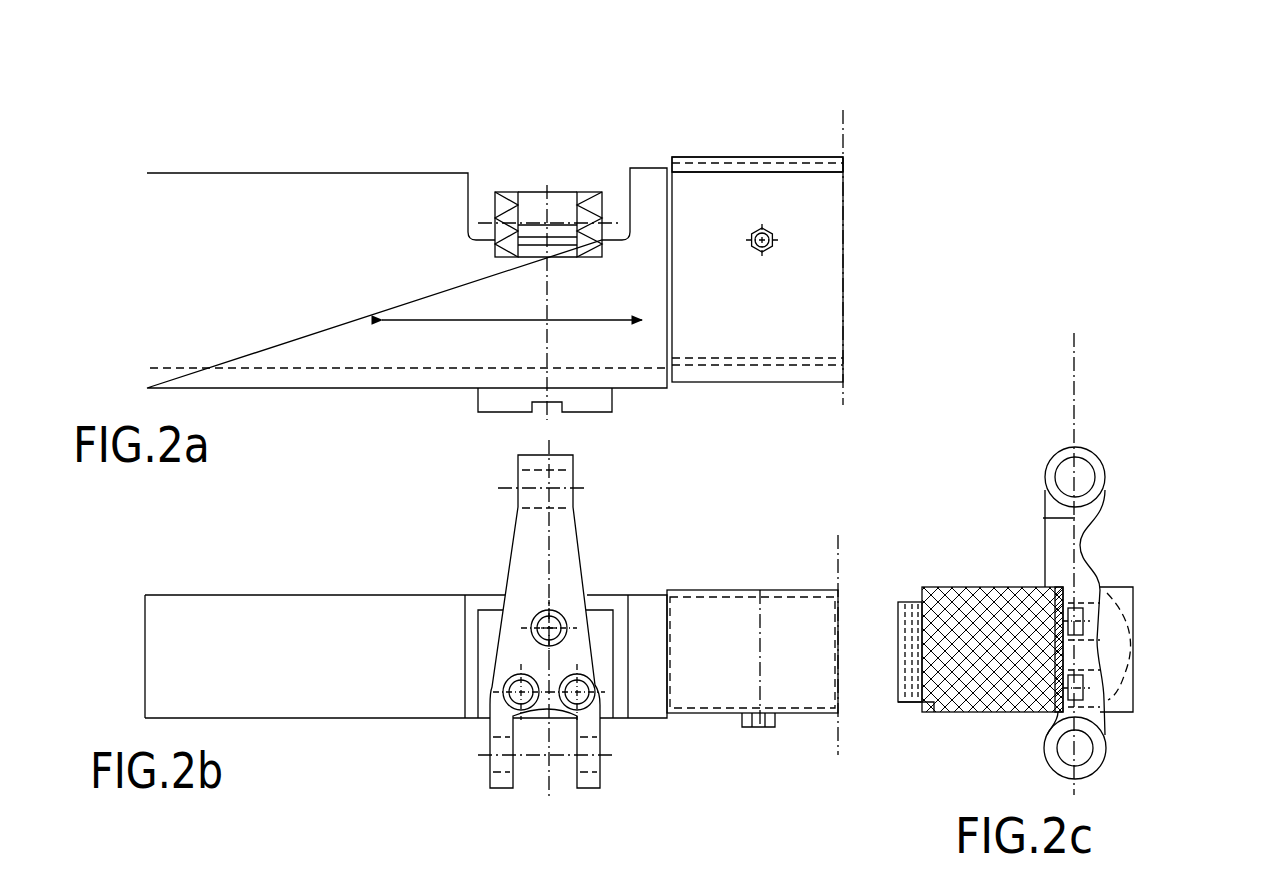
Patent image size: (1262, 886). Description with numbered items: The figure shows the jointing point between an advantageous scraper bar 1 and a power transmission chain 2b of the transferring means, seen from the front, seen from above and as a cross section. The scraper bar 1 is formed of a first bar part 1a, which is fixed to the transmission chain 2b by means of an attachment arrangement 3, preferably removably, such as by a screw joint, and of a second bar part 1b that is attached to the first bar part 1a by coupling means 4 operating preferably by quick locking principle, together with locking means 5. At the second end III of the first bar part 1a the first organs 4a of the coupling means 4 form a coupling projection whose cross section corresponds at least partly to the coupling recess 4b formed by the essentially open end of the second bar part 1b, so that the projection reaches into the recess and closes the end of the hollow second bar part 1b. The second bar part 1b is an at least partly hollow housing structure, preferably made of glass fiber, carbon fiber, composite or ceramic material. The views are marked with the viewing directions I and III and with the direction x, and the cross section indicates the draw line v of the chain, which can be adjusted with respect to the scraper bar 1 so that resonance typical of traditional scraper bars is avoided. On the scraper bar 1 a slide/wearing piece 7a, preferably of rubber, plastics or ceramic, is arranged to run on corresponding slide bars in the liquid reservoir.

In FIG. 2A, the scraper bar 1 is at (858, 278).
In FIG. 2B, the scraper bar 1 is at (138, 623).
In FIG. 2A, the first bar part 1a is at (270, 215).
In FIG. 2B, the first bar part 1a is at (298, 622).
In FIG. 2C, the first bar part 1a is at (985, 608).
In FIG. 2A, the second bar part 1b is at (857, 228).
In FIG. 2B, the second bar part 1b is at (847, 605).
In FIG. 2C, the second bar part 1b is at (1113, 645).
In FIG. 2A, the transmission chain 2b is at (503, 200).
In FIG. 2B, the transmission chain 2b is at (560, 550).
In FIG. 2B, the attachment arrangement 3 is at (570, 613).
In FIG. 2C, the attachment arrangement 3 is at (1085, 585).
In FIG. 2A, the coupling means 4 is at (777, 96).
In FIG. 2B, the coupling means 4 is at (734, 719).
In FIG. 2A, the first organs / coupling projection 4a is at (777, 96).
In FIG. 2B, the first organs / coupling projection 4a is at (734, 719).
In FIG. 2A, the coupling recess 4b is at (738, 152).
In FIG. 2B, the coupling recess 4b is at (714, 692).
In FIG. 2A, the locking means 5 is at (780, 222).
In FIG. 2B, the locking means 5 is at (770, 730).
In FIG. 2A, the slide/wearing piece 7a is at (492, 398).
In FIG. 2A, the view direction I is at (133, 222).
In FIG. 2B, the view direction I is at (133, 686).
In FIG. 2A, the second end III is at (705, 148).
In FIG. 2B, the second end III is at (725, 580).
In FIG. 2A, the displacement direction x is at (460, 322).
In FIG. 2C, the axis v is at (1074, 372).